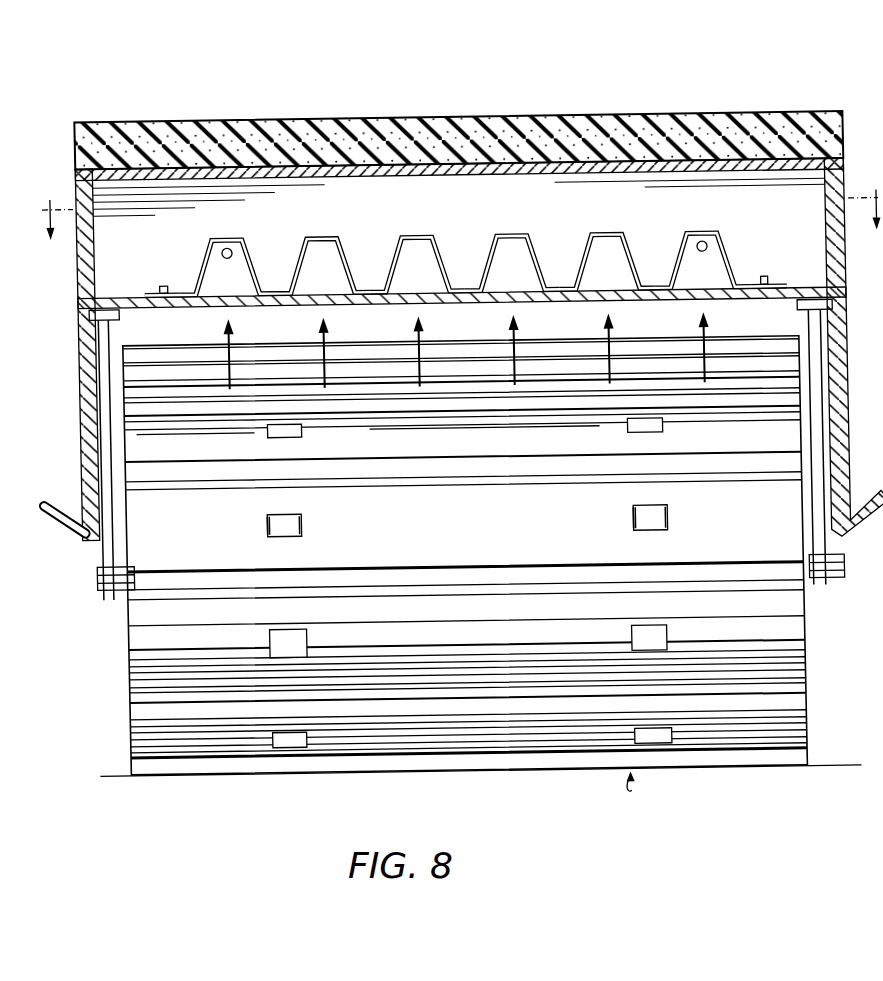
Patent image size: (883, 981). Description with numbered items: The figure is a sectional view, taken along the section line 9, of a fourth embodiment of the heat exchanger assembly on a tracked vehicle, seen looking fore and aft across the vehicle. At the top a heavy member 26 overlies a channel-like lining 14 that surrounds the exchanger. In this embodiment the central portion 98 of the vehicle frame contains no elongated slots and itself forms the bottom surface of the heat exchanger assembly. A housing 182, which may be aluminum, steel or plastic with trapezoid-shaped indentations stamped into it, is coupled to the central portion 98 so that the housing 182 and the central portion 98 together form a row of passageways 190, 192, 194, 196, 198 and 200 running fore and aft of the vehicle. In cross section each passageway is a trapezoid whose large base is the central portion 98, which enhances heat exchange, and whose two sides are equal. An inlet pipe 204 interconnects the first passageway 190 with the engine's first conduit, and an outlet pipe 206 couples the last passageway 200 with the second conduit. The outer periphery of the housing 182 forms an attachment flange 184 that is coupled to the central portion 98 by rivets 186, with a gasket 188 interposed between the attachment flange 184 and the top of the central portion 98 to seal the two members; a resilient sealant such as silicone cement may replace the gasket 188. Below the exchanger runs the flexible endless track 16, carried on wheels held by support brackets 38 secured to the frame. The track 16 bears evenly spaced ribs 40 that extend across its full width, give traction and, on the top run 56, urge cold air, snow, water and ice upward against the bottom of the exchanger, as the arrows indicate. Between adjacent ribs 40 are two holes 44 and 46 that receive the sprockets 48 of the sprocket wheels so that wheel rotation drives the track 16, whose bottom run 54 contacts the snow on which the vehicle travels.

The section line 9- 9 is at (460, 199).
The channel lining 14 is at (850, 271).
The endless track 16 is at (125, 601).
The header slab 26 is at (585, 114).
The support bracket 38 is at (110, 544).
The rib 40 is at (480, 339).
The hole 44 is at (666, 519).
The hole 46 is at (300, 520).
The sprocket 48 is at (266, 523).
The bottom run 54 is at (652, 782).
The top run 56 is at (582, 338).
The central portion 98 is at (650, 306).
The housing 182 is at (465, 243).
The attachment flange 184 is at (151, 286).
The rivet 186 is at (172, 304).
The gasket 188 is at (160, 286).
The passageway 190 is at (224, 275).
The passageway 192 is at (326, 278).
The passageway 194 is at (418, 270).
The passageway 196 is at (511, 269).
The passageway 198 is at (606, 272).
The passageway 200 is at (698, 281).
The inlet pipe 204 is at (231, 245).
The outlet pipe 206 is at (706, 245).